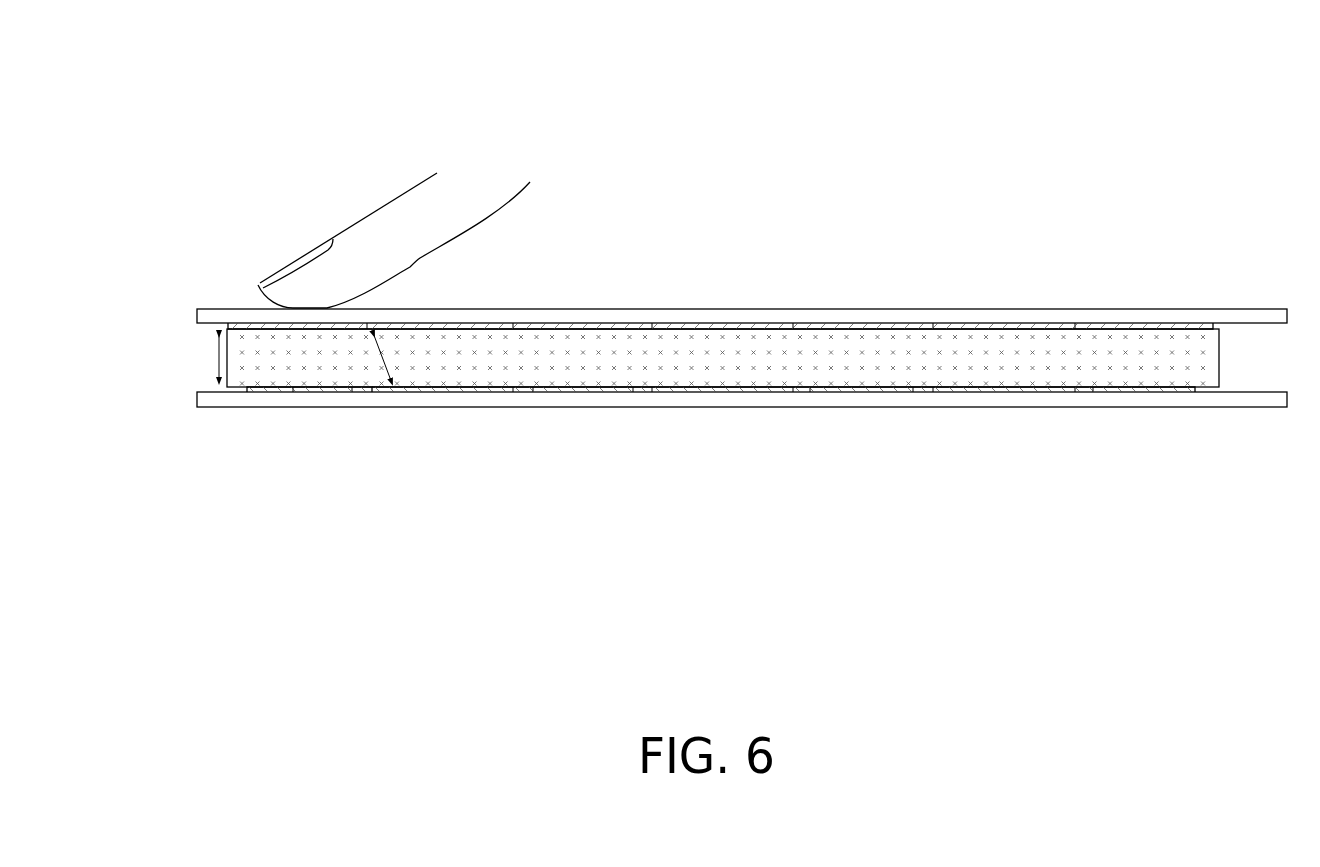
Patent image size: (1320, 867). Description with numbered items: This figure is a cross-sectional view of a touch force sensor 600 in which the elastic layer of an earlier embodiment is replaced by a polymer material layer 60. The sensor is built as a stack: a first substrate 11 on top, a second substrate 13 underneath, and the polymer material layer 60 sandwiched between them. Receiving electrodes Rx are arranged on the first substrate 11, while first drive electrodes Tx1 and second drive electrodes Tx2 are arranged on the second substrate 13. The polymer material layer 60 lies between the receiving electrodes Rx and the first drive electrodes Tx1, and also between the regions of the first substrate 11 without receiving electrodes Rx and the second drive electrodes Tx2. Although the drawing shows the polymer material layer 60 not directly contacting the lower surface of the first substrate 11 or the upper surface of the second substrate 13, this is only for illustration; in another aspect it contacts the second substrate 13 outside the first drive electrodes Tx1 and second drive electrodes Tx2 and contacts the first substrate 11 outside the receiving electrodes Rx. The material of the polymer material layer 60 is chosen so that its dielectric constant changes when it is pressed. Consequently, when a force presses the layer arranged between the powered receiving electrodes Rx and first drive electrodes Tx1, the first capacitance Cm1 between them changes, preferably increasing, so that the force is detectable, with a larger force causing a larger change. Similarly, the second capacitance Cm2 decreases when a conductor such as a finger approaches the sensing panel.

The touch force sensor 600 is at (218, 73).
The first substrate 11 is at (1113, 318).
The second substrate 13 is at (1122, 400).
The polymer material layer 60 is at (1219, 360).
The receiving electrodes Rx is at (605, 325).
The first drive electrodes Tx1 is at (293, 390).
The second drive electrodes Tx2 is at (433, 390).
The first capacitance Cm1 is at (185, 357).
The second capacitance Cm2 is at (411, 358).